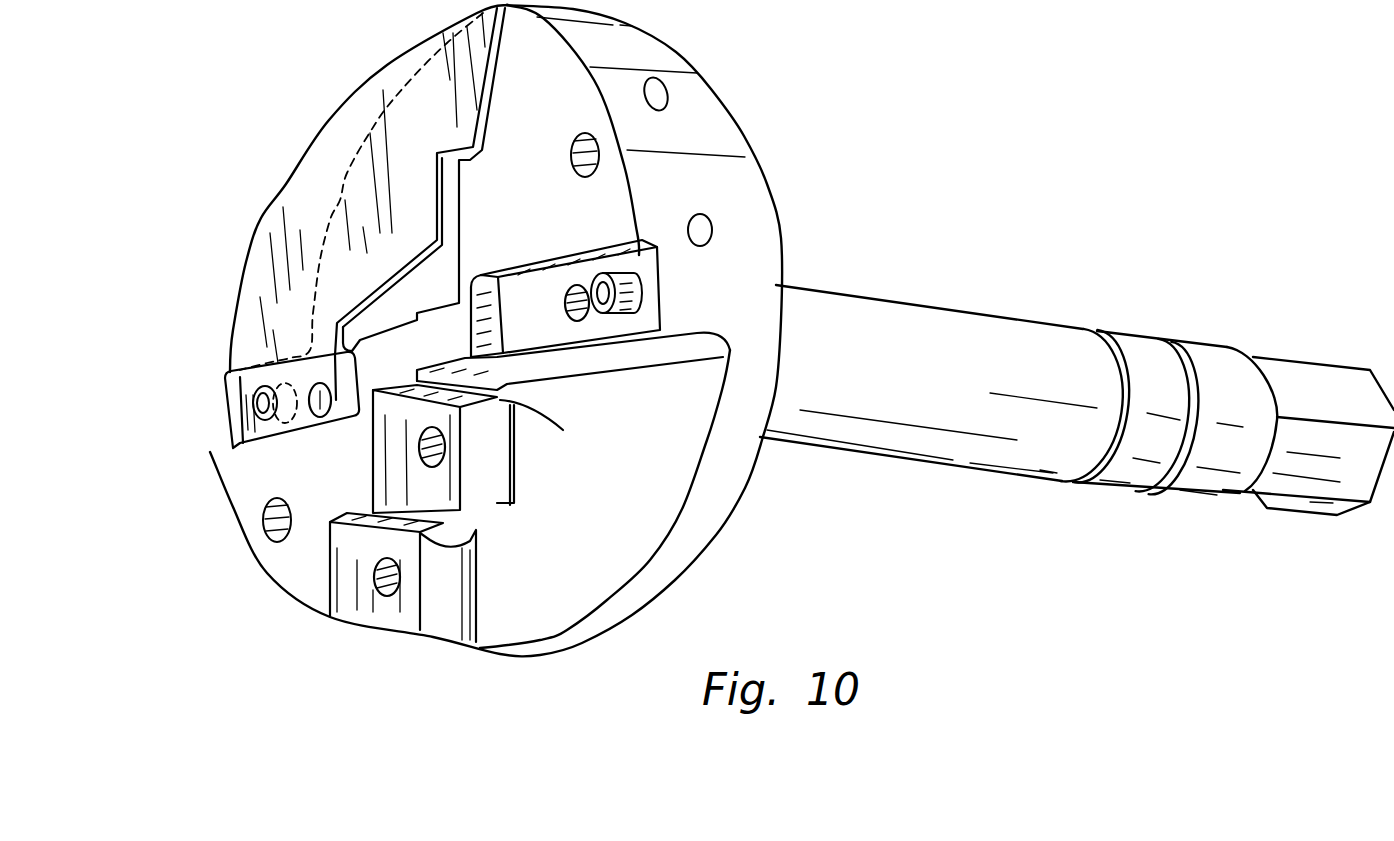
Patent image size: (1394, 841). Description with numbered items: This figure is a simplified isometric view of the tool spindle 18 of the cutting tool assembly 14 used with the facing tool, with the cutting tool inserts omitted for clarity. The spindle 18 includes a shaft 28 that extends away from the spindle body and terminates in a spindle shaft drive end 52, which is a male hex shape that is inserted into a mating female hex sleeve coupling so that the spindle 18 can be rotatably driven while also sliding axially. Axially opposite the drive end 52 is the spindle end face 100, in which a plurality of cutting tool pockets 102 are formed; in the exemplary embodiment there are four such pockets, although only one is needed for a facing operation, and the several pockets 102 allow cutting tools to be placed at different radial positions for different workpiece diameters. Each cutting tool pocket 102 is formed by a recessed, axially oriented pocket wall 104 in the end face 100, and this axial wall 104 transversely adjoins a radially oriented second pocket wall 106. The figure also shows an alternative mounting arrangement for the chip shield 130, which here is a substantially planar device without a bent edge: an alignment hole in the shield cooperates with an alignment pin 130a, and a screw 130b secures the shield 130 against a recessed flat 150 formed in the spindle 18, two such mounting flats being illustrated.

The end face 100 is at (306, 94).
The chip shield 130 is at (305, 205).
The alignment pin 130a is at (265, 403).
The screw 130b is at (297, 407).
The recessed flat 150 is at (547, 300).
The second pocket wall 106 is at (397, 513).
The pocket wall 104 is at (380, 467).
The cutting tool pocket 102 is at (490, 513).
The cutting tool assembly 14 is at (900, 217).
The tool spindle 18 is at (953, 343).
The shaft 28 is at (1128, 343).
The spindle shaft drive end 52 is at (1318, 469).